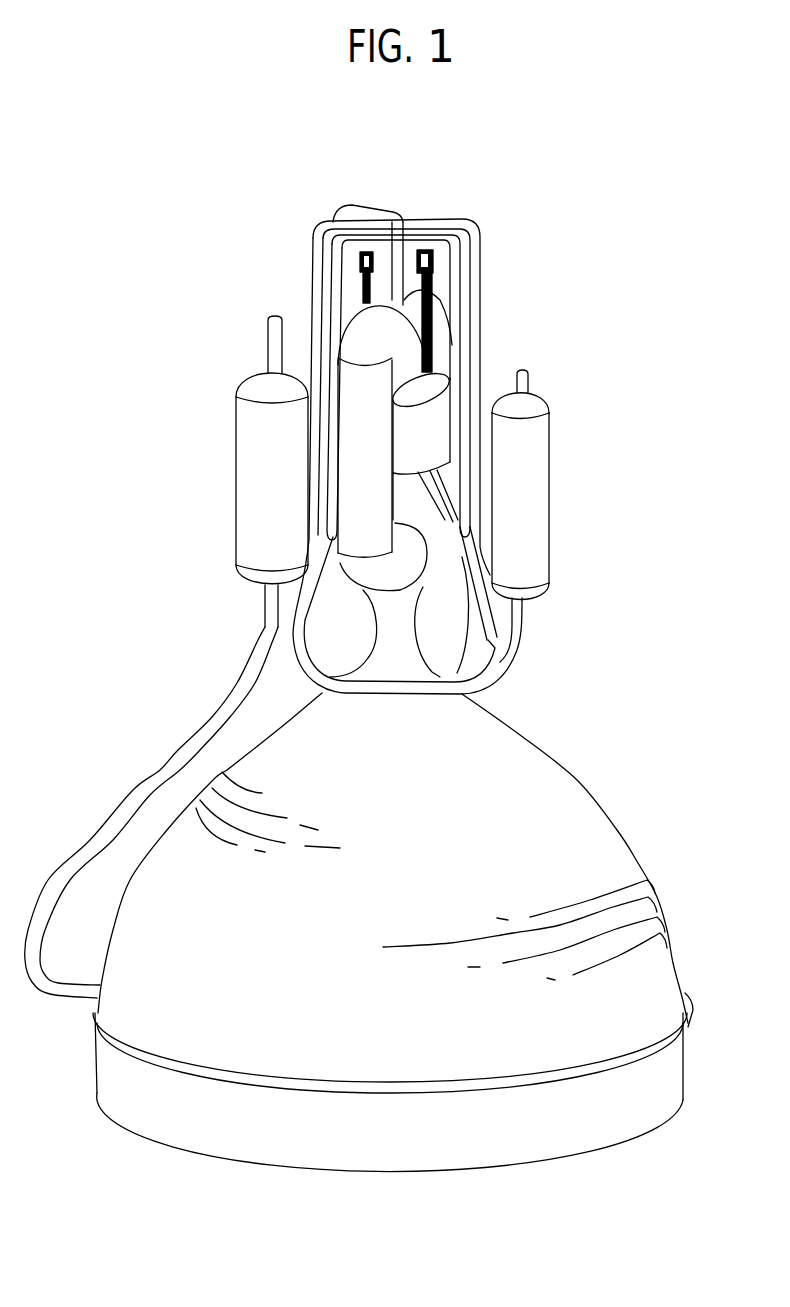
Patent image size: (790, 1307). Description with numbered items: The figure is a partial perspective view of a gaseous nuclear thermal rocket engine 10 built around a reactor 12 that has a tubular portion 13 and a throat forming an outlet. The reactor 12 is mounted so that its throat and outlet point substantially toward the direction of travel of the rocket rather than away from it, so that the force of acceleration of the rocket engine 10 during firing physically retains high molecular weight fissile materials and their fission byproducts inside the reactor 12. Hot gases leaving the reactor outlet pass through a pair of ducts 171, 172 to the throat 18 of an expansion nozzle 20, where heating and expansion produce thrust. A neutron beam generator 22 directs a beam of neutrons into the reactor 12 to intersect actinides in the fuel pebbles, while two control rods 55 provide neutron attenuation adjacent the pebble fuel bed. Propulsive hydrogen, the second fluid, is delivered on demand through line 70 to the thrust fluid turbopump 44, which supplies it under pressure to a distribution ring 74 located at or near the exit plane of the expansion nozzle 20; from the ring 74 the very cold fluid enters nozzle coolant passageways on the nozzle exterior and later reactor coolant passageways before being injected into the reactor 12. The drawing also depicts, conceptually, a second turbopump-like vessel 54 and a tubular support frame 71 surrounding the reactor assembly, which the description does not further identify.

The gaseous nuclear thermal rocket engine 10 is at (578, 357).
The reactor 12 is at (437, 360).
The tubular portion 13 is at (436, 437).
The duct 171 is at (360, 338).
The duct 172 is at (433, 256).
The throat 18 is at (387, 627).
The expansion nozzle 20 is at (617, 823).
The neutron beam generator 22 is at (403, 493).
The thrust fluid turbopump 44 is at (253, 505).
The oxidizer tank 54 is at (535, 505).
The control rods 55 is at (363, 288).
The line 70 is at (134, 790).
The support frame 71 is at (467, 222).
The distribution ring 74 is at (383, 1085).